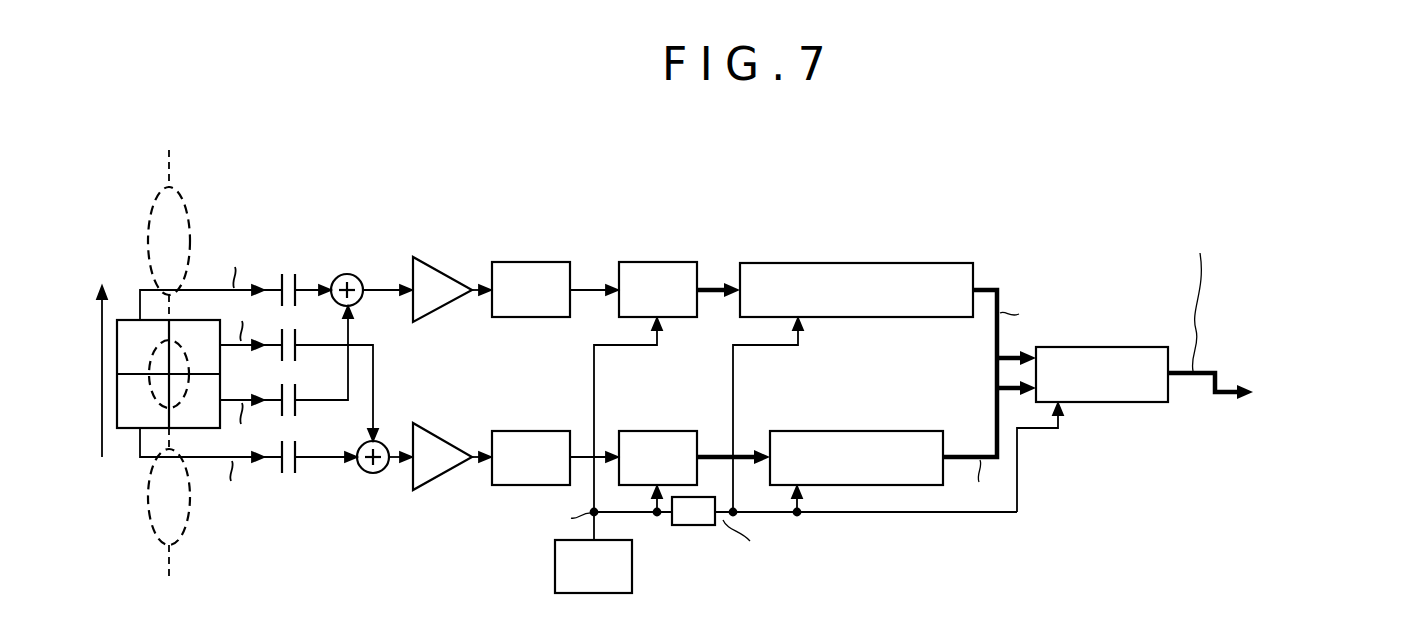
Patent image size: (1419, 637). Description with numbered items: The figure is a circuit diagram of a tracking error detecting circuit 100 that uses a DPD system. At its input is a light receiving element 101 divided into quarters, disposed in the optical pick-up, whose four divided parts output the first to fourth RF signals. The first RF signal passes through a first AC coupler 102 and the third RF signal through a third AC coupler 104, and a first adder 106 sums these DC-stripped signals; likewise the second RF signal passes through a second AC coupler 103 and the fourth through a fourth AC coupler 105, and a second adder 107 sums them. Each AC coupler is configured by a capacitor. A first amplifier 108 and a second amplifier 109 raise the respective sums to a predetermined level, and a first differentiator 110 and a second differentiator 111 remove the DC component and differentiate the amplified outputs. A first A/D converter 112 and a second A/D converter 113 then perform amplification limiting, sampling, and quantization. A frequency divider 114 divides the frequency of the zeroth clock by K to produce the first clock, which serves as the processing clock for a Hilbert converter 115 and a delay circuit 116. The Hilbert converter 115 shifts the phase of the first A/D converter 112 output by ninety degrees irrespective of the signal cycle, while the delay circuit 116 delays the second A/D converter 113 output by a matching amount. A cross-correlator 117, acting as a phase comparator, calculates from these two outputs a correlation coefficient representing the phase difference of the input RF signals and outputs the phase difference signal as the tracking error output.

The TE detecting circuit 100 is at (660, 170).
The light receiving element 101 is at (132, 472).
The first AC coupler 102 is at (289, 281).
The second AC coupler 103 is at (289, 336).
The third AC coupler 104 is at (289, 395).
The fourth AC coupler 105 is at (289, 473).
The first adder 106 is at (347, 273).
The second adder 107 is at (373, 474).
The first amplifier 108 is at (444, 266).
The second amplifier 109 is at (444, 490).
The first differentiator 110 is at (529, 261).
The second differentiator 111 is at (529, 430).
The first A/D converter 112 is at (657, 261).
The second A/D converter 113 is at (657, 430).
The frequency divider 114 is at (698, 527).
The Hilbert converter 115 is at (854, 262).
The delay circuit 116 is at (854, 430).
The cross-correlator 117 is at (1113, 404).